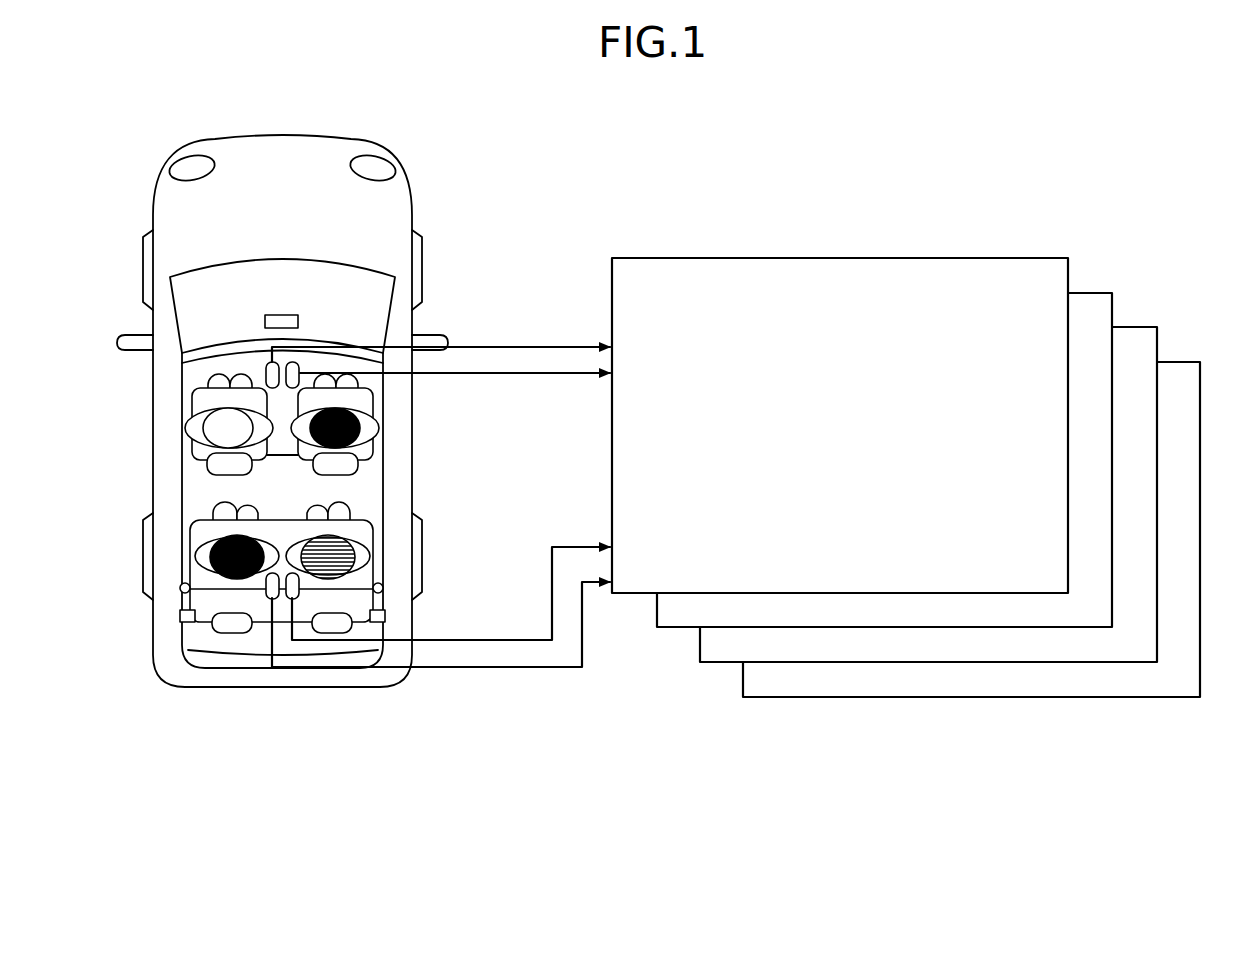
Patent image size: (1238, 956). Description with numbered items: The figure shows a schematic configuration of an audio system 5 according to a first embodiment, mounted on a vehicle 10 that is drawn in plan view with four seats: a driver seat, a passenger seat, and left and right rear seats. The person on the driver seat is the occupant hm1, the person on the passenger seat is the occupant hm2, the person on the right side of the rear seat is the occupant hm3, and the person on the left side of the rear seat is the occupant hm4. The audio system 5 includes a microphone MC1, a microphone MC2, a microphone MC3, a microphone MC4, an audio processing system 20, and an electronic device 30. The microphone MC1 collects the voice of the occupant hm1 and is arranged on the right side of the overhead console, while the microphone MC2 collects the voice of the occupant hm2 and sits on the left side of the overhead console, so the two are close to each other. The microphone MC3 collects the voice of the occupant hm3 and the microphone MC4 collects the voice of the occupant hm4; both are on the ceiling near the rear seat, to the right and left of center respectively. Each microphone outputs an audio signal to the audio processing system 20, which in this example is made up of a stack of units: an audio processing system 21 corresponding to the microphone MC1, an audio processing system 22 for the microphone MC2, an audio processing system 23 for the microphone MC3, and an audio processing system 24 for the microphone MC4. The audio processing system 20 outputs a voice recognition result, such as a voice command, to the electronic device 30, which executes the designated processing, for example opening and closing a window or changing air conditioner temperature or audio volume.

The audio system 5 is at (526, 121).
The vehicle 10 is at (415, 203).
The audio processing system 20 is at (921, 443).
The audio processing system 21 is at (1013, 258).
The audio processing system 22 is at (1082, 293).
The audio processing system 23 is at (1133, 327).
The audio processing system 24 is at (1177, 362).
The electronic device 30 is at (283, 315).
The microphone MC1 is at (300, 374).
The microphone MC2 is at (266, 376).
The microphone MC3 is at (291, 599).
The microphone MC4 is at (265, 598).
The occupant hm1 is at (377, 438).
The occupant hm2 is at (197, 436).
The occupant hm3 is at (375, 581).
The occupant hm4 is at (203, 568).